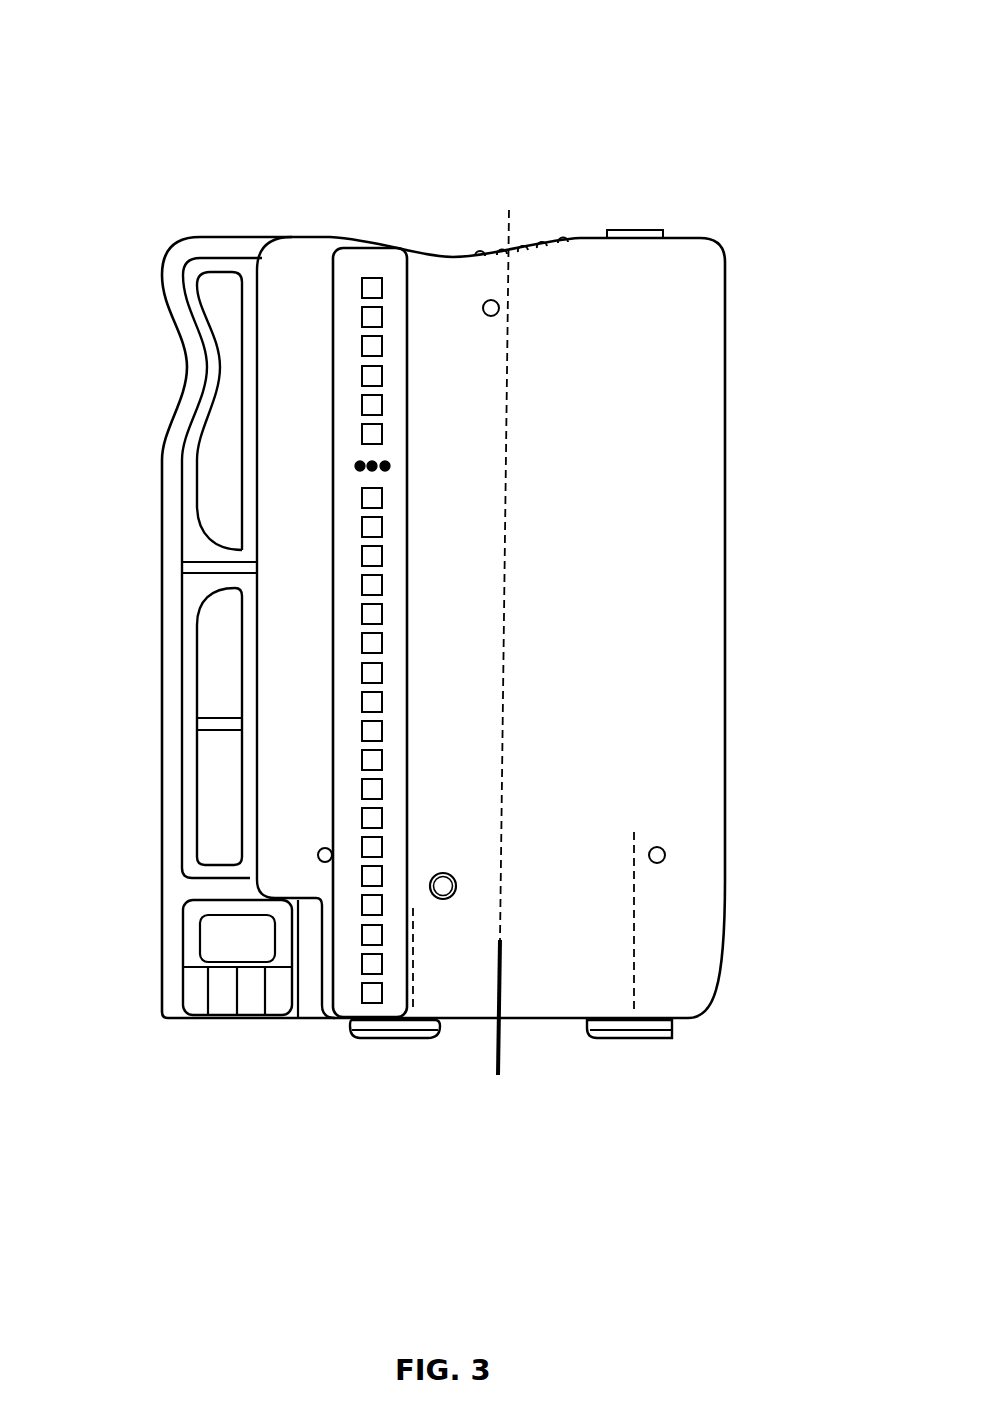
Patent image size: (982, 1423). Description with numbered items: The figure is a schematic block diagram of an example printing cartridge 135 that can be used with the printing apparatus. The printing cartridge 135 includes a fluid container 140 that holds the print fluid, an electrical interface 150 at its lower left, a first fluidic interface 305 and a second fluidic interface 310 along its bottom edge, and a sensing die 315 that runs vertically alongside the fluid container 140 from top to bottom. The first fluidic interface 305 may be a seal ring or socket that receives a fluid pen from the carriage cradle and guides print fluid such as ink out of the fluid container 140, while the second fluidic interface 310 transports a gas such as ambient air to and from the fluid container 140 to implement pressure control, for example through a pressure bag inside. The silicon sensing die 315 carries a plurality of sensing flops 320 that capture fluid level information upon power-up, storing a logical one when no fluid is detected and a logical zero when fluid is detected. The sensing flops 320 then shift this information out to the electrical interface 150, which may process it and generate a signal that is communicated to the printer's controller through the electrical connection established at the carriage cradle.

The printing cartridge 135 is at (640, 66).
The fluid container 140 is at (633, 697).
The electrical interface 150 is at (178, 965).
The first fluidic interface 305 is at (660, 1038).
The second fluidic interface 310 is at (367, 1040).
The sensing die 315 is at (408, 286).
The sensing flops 320 is at (346, 260).